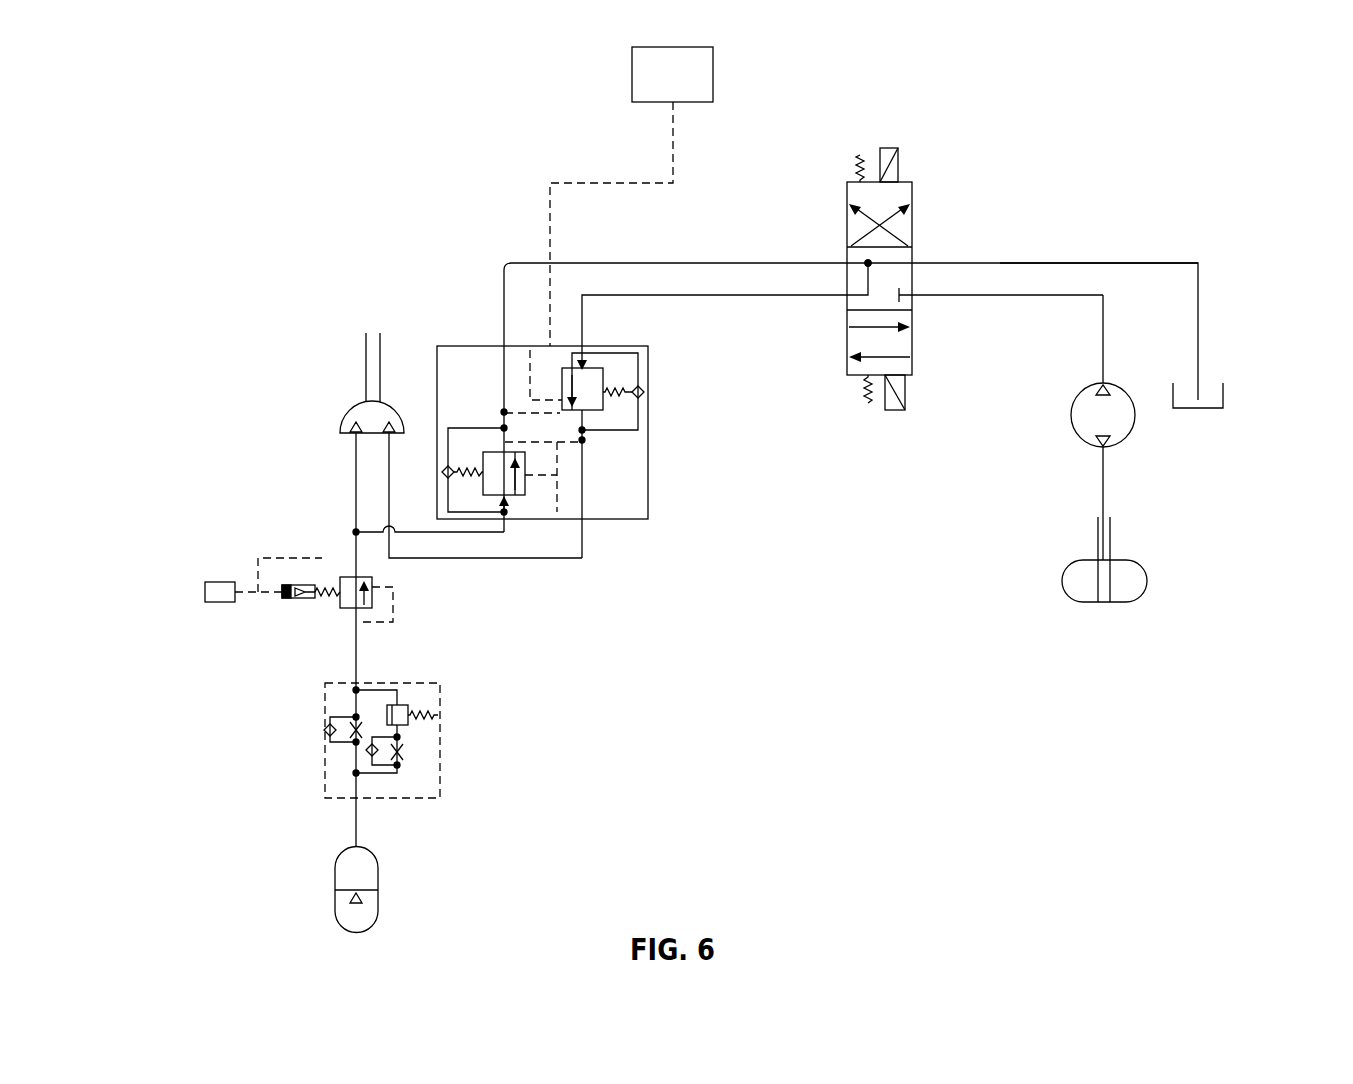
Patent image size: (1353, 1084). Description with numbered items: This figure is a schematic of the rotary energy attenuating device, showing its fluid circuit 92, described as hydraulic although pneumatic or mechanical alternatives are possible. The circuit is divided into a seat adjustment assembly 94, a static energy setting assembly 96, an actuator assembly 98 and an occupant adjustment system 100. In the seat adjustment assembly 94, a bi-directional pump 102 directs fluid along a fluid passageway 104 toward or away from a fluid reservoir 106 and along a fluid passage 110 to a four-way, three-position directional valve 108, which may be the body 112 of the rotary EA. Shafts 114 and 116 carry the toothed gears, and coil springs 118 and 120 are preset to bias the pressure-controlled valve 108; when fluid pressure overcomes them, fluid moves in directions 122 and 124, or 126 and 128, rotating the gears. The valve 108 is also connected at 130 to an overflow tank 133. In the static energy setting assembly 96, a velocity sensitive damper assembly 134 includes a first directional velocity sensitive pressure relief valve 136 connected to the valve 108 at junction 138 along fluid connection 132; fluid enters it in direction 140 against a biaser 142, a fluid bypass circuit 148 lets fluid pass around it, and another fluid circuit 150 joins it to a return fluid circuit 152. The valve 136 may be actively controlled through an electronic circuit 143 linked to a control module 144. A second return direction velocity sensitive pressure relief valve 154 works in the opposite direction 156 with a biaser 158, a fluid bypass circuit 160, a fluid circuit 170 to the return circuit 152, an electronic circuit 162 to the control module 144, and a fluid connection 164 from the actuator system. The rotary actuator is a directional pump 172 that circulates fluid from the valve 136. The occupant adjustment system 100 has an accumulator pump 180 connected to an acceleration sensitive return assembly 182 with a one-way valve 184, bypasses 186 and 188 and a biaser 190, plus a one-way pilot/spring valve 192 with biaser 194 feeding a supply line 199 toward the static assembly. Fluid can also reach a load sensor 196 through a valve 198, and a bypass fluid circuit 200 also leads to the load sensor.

The fluid circuit 92 is at (862, 582).
The seat adjustment assembly 94 is at (1166, 216).
The static energy setting assembly 96 is at (653, 450).
The actuator assembly 98 is at (295, 421).
The occupant adjustment system 100 is at (210, 782).
The bi-directional pump 102 is at (1082, 432).
The fluid passageway 104 is at (1101, 345).
The fluid reservoir 106 is at (1148, 580).
The 4-way, 3 position directional valve 108 is at (863, 269).
The fluid passage 110 is at (985, 297).
The body 112 is at (905, 225).
The shaft 114 is at (899, 158).
The shaft 116 is at (903, 395).
The coil spring 118 is at (860, 158).
The coil spring 120 is at (866, 400).
The fluid flow direction 122 is at (863, 213).
The fluid flow direction 124 is at (898, 214).
The fluid flow direction 126 is at (873, 355).
The fluid flow direction 128 is at (888, 330).
The fluid connection to overflow tank 130 is at (1040, 262).
The fluid connection 132 is at (505, 255).
The overflow tank 133 is at (1207, 414).
The damper assembly 134 is at (450, 346).
The first directional velocity sensitive pressure relief valve 136 is at (586, 366).
The junction 138 is at (866, 268).
The fluid flow direction 140 is at (573, 389).
The biaser 142 is at (623, 387).
The electronic circuit 143 is at (545, 350).
The control module 144 is at (630, 76).
The fluid bypass circuit 148 is at (645, 405).
The fluid circuit 150 is at (520, 395).
The return fluid circuit 152 is at (503, 358).
The second return direction velocity sensitive pressure relief valve 154 is at (529, 526).
The fluid flow direction 156 is at (527, 477).
The biaser 158 is at (484, 470).
The fluid bypass circuit 160 is at (470, 428).
The electronic circuit 162 is at (526, 478).
The fluid connection 164 is at (422, 532).
The fluid circuit 170 is at (560, 445).
The directional pump 172 is at (352, 412).
The accumulator pump 180 is at (335, 900).
The acceleration sensitive return assembly 182 is at (410, 745).
The one-way valve 184 is at (401, 704).
The bypass 186 is at (343, 747).
The bypass 188 is at (381, 777).
The biaser 190 is at (440, 715).
The one-way pilot/spring valve 192 is at (345, 577).
The biaser 194 is at (330, 600).
The load sensor 196 is at (201, 592).
The valve 198 is at (300, 600).
The supply line 199 is at (355, 480).
The bypass fluid circuit 200 is at (270, 558).